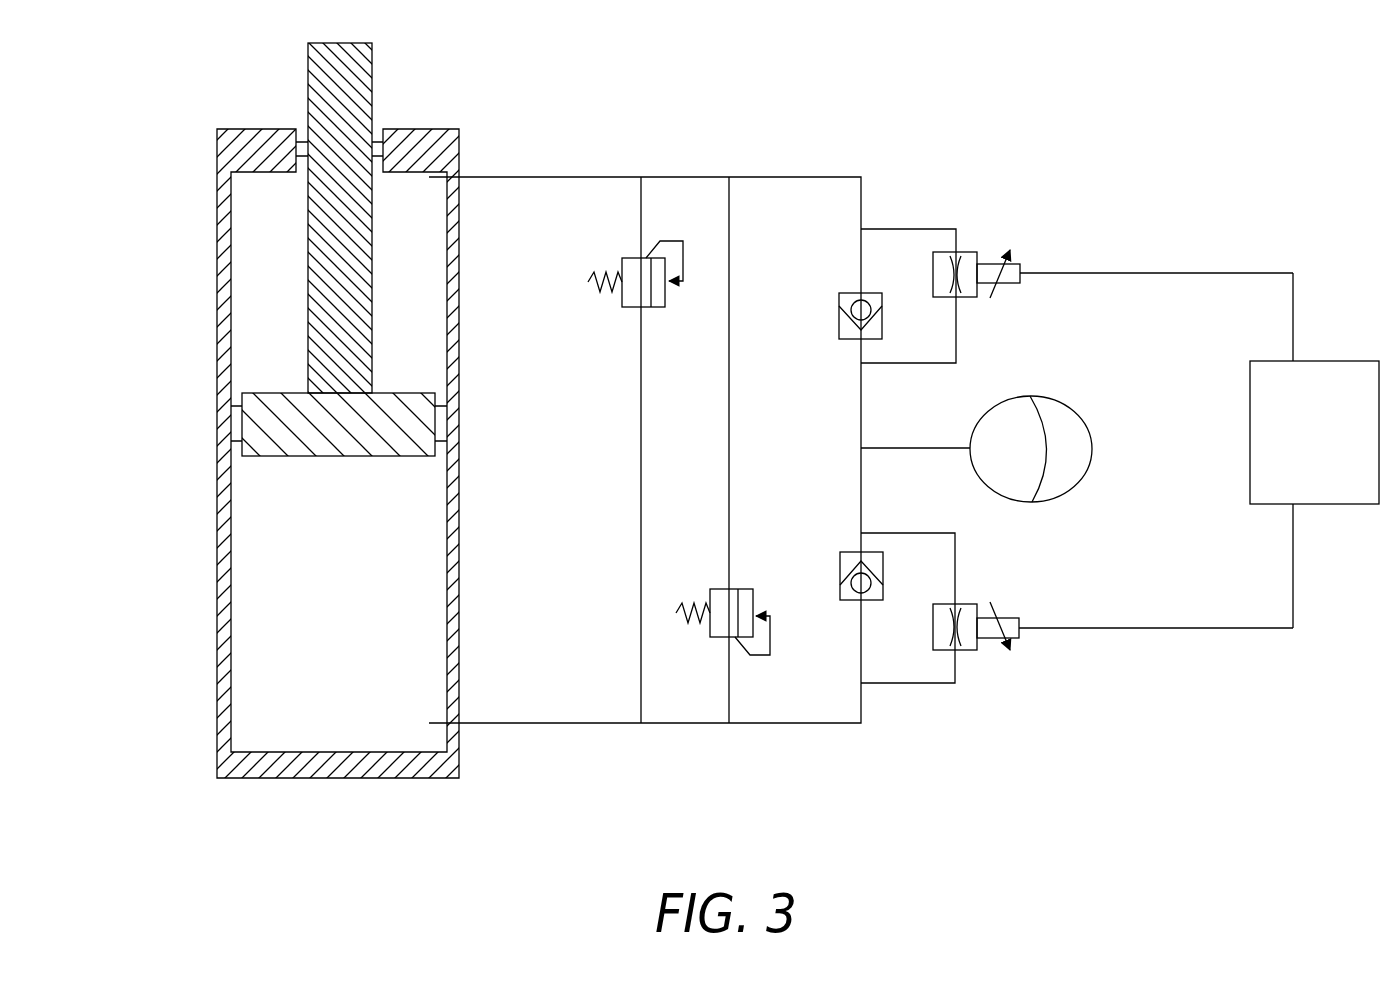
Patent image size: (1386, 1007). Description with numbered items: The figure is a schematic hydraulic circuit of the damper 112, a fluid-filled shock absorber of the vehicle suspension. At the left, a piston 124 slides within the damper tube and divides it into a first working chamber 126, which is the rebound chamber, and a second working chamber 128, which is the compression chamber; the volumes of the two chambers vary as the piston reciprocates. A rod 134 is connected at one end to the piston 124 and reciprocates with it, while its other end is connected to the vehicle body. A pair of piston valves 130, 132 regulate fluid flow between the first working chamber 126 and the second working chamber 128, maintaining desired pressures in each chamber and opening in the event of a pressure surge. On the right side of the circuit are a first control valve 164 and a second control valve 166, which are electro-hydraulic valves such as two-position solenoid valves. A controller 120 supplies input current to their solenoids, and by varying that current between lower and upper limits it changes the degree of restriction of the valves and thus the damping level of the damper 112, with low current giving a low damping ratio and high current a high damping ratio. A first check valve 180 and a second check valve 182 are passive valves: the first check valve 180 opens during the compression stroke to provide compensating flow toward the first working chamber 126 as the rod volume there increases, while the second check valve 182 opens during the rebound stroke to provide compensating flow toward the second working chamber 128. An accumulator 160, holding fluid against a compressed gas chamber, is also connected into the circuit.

The damper 112 is at (1206, 166).
The controller 120 is at (1323, 451).
The piston 124 is at (255, 425).
The first working chamber 126 is at (292, 243).
The second working chamber 128 is at (320, 524).
The piston valve 130 is at (630, 268).
The piston valve 132 is at (722, 630).
The rod 134 is at (316, 68).
The accumulator 160 is at (1027, 410).
The first control valve 164 is at (967, 258).
The second control valve 166 is at (972, 652).
The first check valve 180 is at (845, 298).
The second check valve 182 is at (855, 595).